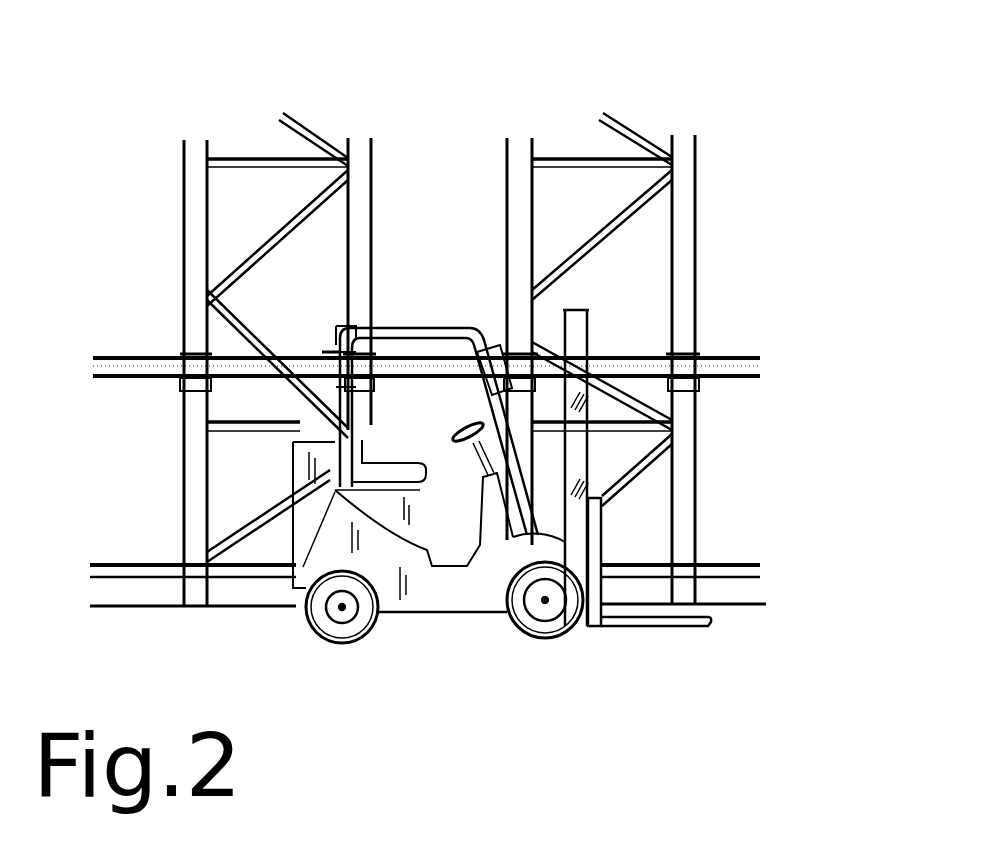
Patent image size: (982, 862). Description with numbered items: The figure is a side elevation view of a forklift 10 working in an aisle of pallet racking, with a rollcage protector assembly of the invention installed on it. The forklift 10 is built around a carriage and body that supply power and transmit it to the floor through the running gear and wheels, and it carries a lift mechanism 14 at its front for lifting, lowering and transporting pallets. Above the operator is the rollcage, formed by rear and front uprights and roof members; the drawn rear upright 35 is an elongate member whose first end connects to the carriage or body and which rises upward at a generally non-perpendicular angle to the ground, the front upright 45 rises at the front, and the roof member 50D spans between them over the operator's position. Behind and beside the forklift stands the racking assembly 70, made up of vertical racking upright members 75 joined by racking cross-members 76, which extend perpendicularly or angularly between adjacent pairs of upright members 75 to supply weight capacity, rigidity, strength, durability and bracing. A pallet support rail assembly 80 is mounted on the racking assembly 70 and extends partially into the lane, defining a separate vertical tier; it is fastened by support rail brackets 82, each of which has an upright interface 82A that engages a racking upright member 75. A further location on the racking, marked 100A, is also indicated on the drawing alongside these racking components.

The forklift 10 is at (478, 416).
The lift mechanism 14 is at (685, 660).
The rear upright 35 is at (345, 392).
The front upright 45 is at (684, 527).
The roof member 50D is at (437, 328).
The racking assembly 70 is at (450, 303).
The racking upright member 75 is at (188, 176).
The racking cross-member 76 is at (608, 222).
The pallet support rail assembly 80 is at (442, 366).
The support rail bracket 82 is at (387, 381).
The upright interface 82A is at (190, 404).
The position marker 100A is at (312, 335).